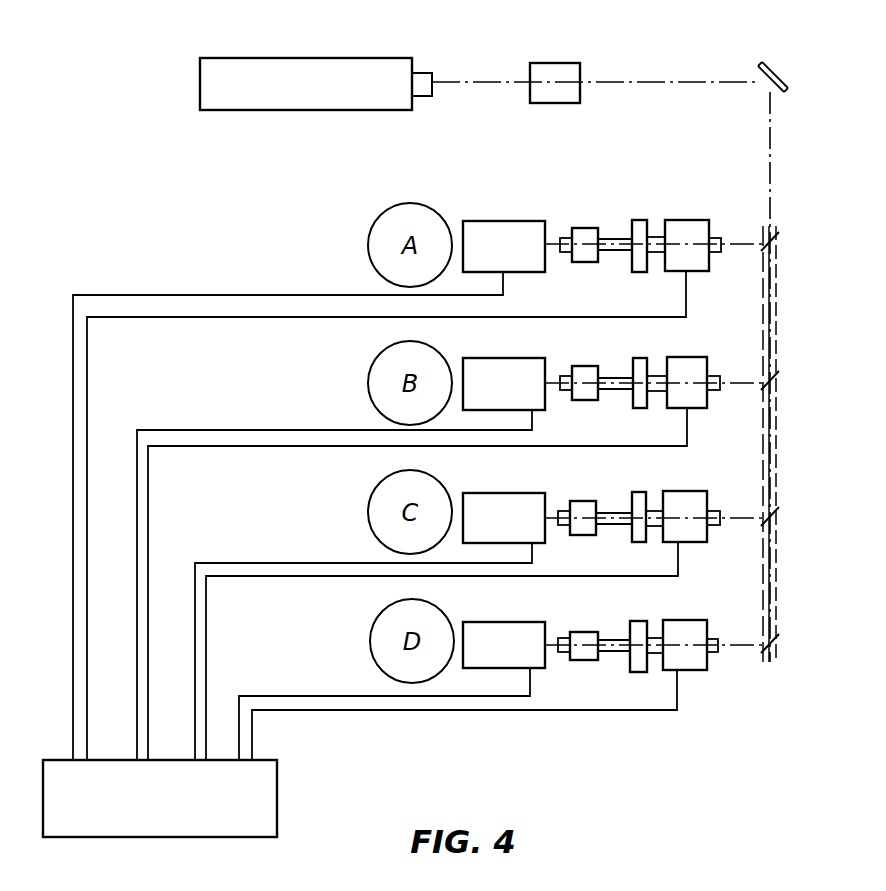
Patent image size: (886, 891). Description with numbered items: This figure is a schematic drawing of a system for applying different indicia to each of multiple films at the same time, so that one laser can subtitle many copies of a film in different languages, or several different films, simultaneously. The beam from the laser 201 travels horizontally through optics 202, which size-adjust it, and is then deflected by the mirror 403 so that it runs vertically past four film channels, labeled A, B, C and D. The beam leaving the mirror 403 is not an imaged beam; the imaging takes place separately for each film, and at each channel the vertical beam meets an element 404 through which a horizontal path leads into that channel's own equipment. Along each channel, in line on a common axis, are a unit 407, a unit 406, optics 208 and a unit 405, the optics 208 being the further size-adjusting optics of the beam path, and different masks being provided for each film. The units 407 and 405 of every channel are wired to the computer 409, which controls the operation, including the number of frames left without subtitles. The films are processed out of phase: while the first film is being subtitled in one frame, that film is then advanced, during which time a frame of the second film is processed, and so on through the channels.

The laser 201 is at (345, 52).
The optics 202 is at (561, 58).
The mirror 403 is at (770, 58).
The beam splitters 404 is at (759, 268).
The motor 405 is at (696, 216).
The encoder 406 is at (584, 224).
The driver / controller 407 is at (520, 192).
The optics 208 is at (641, 218).
The computer 409 is at (269, 805).